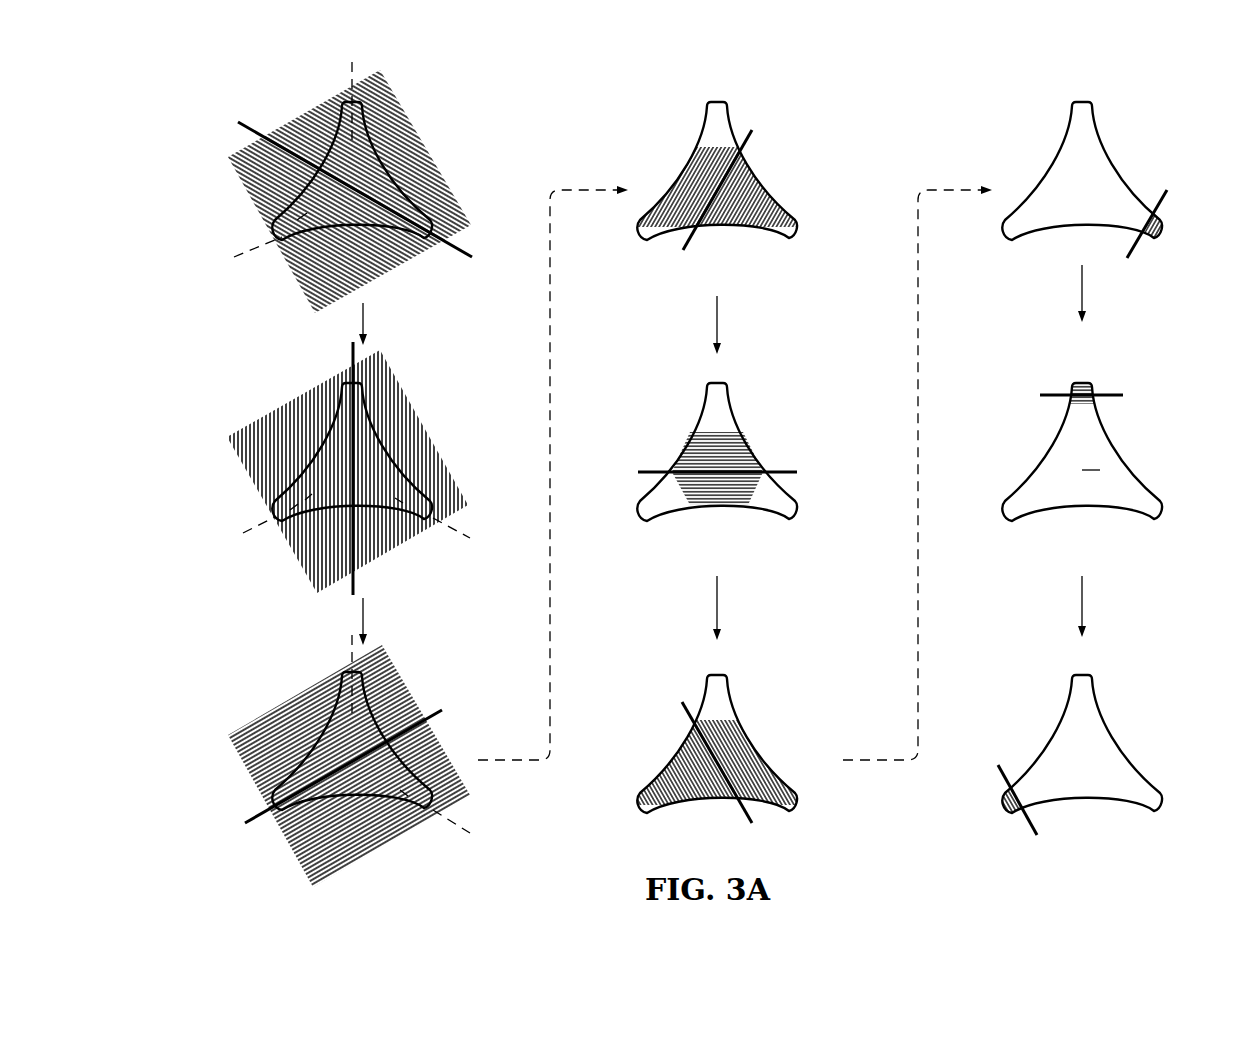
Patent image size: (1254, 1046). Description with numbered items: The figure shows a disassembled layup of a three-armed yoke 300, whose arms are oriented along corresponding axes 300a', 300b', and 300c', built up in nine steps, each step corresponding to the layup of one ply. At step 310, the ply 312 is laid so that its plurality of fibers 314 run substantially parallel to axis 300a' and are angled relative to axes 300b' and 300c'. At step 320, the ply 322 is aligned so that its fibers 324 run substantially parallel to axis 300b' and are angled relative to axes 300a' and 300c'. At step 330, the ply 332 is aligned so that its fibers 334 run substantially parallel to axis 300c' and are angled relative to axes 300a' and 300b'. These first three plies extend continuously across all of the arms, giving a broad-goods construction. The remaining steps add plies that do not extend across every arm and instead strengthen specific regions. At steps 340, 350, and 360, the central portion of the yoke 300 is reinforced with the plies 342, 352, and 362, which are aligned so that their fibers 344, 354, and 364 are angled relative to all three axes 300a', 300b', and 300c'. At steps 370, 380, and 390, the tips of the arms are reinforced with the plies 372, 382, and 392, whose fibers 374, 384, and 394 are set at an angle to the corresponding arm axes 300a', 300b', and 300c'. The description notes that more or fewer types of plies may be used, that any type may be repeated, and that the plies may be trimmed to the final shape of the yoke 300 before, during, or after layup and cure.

The yoke 300 is at (122, 98).
The axis of arm 300a 300a' is at (443, 567).
The axis of arm 300b 300b' is at (308, 388).
The axis of arm 300c 300c' is at (215, 536).
The first layup step 310 is at (462, 130).
The ply 312 is at (302, 282).
The fibers 314 is at (236, 126).
The second layup step 320 is at (462, 410).
The ply 322 is at (297, 547).
The fibers 324 is at (356, 588).
The third layup step 330 is at (442, 667).
The ply 332 is at (246, 735).
The fibers 334 is at (446, 712).
The fourth layup step 340 is at (784, 134).
The ply 342 is at (748, 210).
The fibers 344 is at (690, 242).
The fifth layup step 350 is at (784, 414).
The ply 352 is at (718, 438).
The fibers 354 is at (650, 470).
The sixth layup step 360 is at (784, 710).
The ply 362 is at (690, 785).
The fibers 364 is at (686, 718).
The seventh layup step 370 is at (1150, 134).
The ply 372 is at (1157, 237).
The fibers 374 is at (1159, 212).
The eighth layup step 380 is at (1150, 438).
The ply 382 is at (1080, 386).
The fibers 384 is at (1095, 390).
The ninth layup step 390 is at (1150, 710).
The ply 392 is at (1005, 805).
The fibers 394 is at (998, 775).